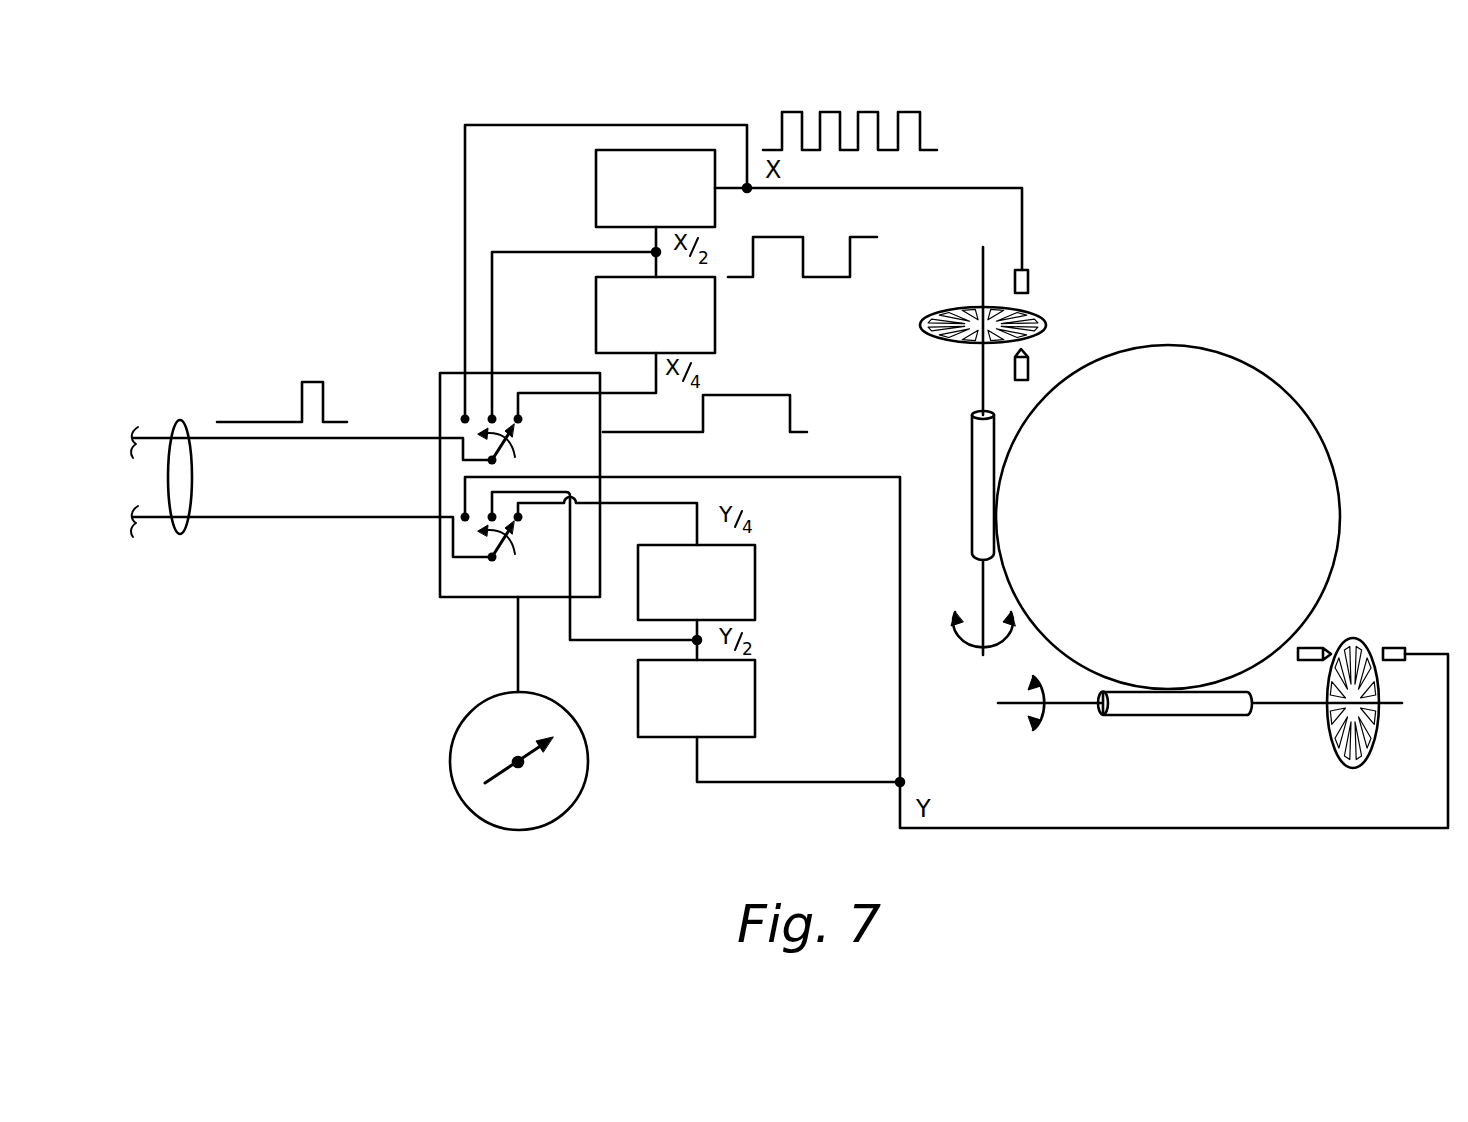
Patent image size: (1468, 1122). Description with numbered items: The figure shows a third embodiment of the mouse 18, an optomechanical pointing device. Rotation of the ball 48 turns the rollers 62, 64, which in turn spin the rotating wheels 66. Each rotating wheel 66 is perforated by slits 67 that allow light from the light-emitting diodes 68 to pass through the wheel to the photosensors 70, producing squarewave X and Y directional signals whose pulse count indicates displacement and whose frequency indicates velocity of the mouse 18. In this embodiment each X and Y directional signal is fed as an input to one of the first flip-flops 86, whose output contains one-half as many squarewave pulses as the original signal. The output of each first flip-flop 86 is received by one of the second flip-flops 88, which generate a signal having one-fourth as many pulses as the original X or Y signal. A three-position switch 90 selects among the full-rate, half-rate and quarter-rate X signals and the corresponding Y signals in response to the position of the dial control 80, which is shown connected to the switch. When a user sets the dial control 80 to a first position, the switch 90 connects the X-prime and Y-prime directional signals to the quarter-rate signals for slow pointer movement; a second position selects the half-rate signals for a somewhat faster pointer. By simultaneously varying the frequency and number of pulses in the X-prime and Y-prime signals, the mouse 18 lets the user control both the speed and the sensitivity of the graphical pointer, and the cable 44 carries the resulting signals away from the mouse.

The mouse 18 is at (1233, 252).
The cable 44 is at (182, 421).
The ball 48 is at (1341, 461).
The roller 62 is at (972, 497).
The roller 64 is at (1200, 716).
The rotating wheel 66 is at (1040, 318).
The slits 67 is at (948, 318).
The light-emitting diode 68 is at (1030, 367).
The photosensor 70 is at (1030, 271).
The dial control 80 is at (574, 802).
The first flip-flop 86 is at (596, 177).
The second flip-flop 88 is at (596, 304).
The three-position switch 90 is at (440, 401).